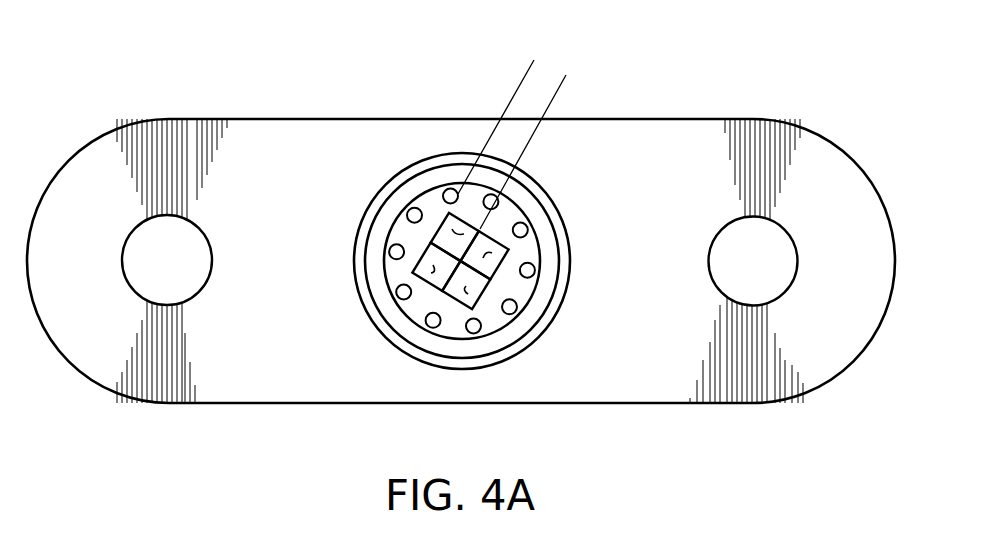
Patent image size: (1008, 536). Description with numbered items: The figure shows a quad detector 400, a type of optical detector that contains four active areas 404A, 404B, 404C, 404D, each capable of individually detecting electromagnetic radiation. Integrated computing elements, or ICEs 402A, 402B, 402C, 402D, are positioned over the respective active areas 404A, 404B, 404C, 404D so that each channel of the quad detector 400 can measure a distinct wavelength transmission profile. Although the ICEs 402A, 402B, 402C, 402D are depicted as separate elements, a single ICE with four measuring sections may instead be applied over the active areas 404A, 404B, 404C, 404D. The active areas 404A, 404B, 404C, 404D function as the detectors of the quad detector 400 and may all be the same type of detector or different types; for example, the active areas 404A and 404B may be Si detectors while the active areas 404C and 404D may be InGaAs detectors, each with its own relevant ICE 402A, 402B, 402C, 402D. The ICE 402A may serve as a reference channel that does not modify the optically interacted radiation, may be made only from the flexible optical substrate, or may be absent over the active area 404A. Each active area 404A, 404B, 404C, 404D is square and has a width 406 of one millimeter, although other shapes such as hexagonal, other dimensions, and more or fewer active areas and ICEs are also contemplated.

The quad detector 400 is at (583, 282).
The ICE 402A is at (427, 160).
The active area 404A is at (452, 229).
The ICE 402B is at (594, 228).
The active area 404B is at (483, 258).
The ICE 402C is at (477, 365).
The active area 404C is at (466, 286).
The ICE 402D is at (326, 294).
The active area 404D is at (433, 265).
The width 406 is at (499, 52).